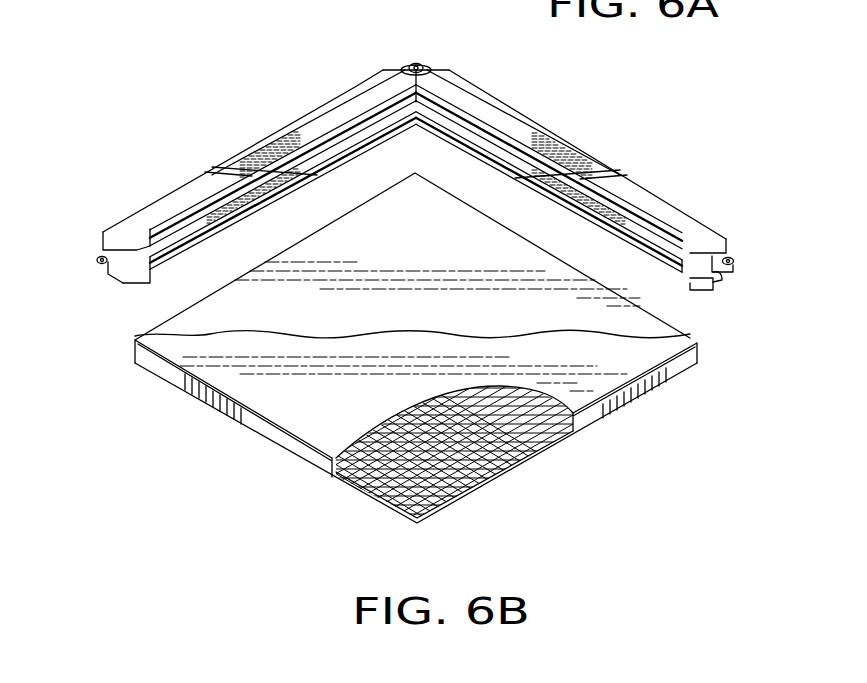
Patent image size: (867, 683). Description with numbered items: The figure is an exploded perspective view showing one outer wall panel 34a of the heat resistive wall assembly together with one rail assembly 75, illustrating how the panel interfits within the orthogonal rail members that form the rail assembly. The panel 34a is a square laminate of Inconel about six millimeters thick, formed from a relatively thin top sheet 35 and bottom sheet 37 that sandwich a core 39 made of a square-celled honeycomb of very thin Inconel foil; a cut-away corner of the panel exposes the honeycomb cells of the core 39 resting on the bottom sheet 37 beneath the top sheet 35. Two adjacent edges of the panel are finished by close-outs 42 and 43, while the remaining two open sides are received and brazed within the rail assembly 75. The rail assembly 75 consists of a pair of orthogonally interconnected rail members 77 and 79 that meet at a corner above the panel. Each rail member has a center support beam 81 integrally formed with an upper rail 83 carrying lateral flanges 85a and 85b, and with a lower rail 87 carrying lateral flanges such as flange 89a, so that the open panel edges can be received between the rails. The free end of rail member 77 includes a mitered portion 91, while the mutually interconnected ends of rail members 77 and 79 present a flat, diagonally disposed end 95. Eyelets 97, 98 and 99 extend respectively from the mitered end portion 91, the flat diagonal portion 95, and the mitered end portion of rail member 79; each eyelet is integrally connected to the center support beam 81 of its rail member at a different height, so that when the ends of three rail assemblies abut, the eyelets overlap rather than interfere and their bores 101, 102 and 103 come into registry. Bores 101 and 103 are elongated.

The square panel 34a is at (447, 255).
The top sheet 35 is at (542, 403).
The bottom sheet 37 is at (448, 515).
The core 39 is at (447, 457).
The close-out 42 is at (285, 443).
The close-out 43 is at (594, 414).
The rail assembly 75 is at (280, 112).
The rail member 77 is at (180, 205).
The rail member 79 is at (554, 136).
The center support beam 81 is at (133, 262).
The upper rail 83 is at (636, 196).
The lateral flange 85a is at (678, 207).
The lateral flange 85b is at (628, 214).
The lower rail 87 is at (722, 275).
The lateral flange 89a is at (661, 247).
The mitered portion 91 is at (102, 240).
The flat, diagonally disposed end 95 is at (391, 66).
The eyelet 97 is at (120, 272).
The eyelet 98 is at (424, 64).
The eyelet 99 is at (741, 257).
The bore 101 is at (97, 258).
The bore 102 is at (418, 62).
The bore 103 is at (737, 265).